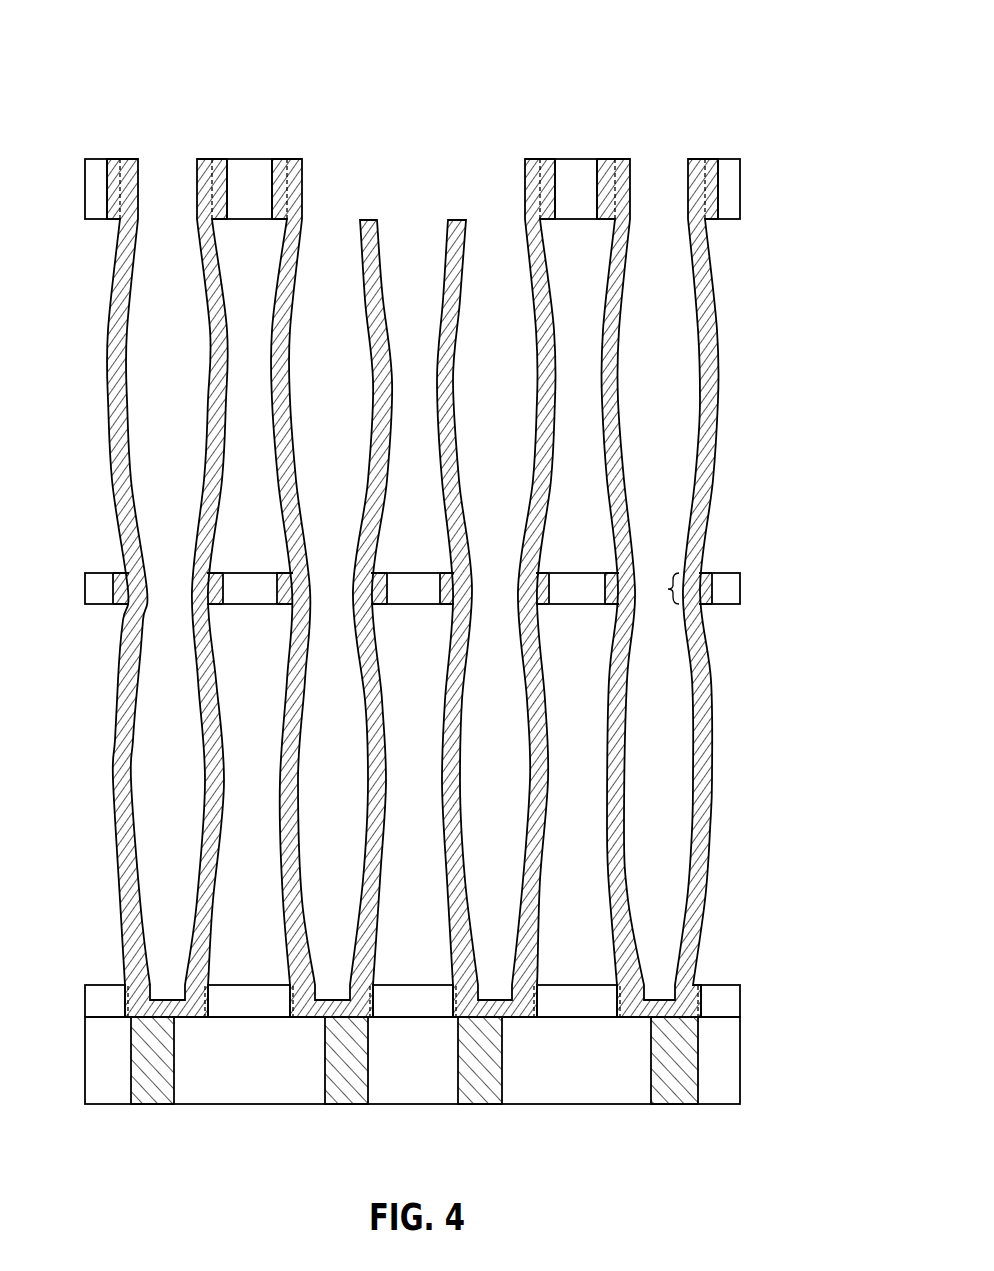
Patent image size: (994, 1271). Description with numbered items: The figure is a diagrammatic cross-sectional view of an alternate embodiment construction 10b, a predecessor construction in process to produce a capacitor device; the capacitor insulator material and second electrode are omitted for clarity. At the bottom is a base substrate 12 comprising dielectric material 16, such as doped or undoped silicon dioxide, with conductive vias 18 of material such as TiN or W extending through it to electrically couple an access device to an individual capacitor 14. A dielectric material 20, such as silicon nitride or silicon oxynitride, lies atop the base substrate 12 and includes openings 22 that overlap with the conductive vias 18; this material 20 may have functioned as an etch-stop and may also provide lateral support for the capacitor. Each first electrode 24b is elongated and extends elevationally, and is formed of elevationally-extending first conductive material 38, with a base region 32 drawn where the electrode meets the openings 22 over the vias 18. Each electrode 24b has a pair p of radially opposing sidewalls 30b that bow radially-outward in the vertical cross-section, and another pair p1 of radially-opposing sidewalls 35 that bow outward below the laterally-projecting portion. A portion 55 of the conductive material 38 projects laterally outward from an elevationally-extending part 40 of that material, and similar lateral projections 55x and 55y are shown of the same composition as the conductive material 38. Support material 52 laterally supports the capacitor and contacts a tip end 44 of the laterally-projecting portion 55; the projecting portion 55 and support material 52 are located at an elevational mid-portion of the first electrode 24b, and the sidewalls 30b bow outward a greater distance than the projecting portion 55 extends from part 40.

The construction 10b is at (750, 100).
The base substrate 12 is at (743, 1062).
The capacitor 14 is at (168, 128).
The dielectric material 16 is at (92, 1092).
The conductive via 18 is at (148, 1043).
The dielectric material 20 is at (104, 994).
The opening 22 is at (214, 997).
The first electrode 24b is at (130, 158).
The sidewall 30b is at (124, 393).
The fin base 32 is at (178, 1007).
The sidewall 35 is at (203, 812).
The first conductive material 38 is at (124, 447).
The elevationally-extending part 40 is at (661, 588).
The tip end 44 is at (718, 582).
The support material 52 is at (248, 182).
The laterally-projecting portion 55 is at (702, 606).
The lateral projection 55x is at (713, 178).
The lateral projection 55y is at (702, 1018).
The pair of radially opposing sidewalls p is at (103, 294).
The pair of radially-opposing sidewalls p1 is at (112, 692).